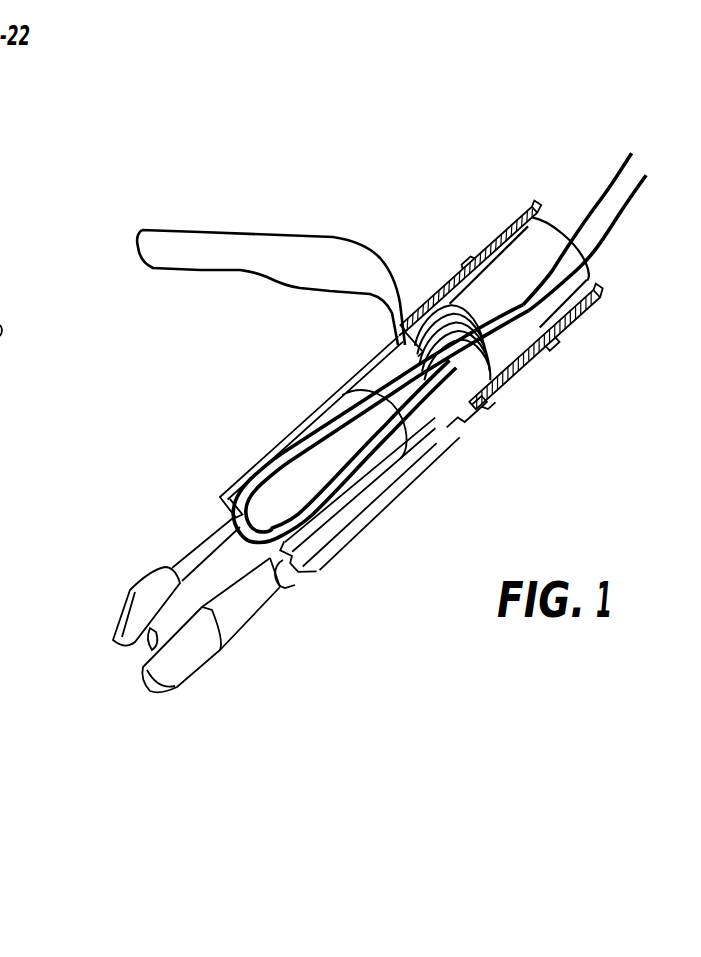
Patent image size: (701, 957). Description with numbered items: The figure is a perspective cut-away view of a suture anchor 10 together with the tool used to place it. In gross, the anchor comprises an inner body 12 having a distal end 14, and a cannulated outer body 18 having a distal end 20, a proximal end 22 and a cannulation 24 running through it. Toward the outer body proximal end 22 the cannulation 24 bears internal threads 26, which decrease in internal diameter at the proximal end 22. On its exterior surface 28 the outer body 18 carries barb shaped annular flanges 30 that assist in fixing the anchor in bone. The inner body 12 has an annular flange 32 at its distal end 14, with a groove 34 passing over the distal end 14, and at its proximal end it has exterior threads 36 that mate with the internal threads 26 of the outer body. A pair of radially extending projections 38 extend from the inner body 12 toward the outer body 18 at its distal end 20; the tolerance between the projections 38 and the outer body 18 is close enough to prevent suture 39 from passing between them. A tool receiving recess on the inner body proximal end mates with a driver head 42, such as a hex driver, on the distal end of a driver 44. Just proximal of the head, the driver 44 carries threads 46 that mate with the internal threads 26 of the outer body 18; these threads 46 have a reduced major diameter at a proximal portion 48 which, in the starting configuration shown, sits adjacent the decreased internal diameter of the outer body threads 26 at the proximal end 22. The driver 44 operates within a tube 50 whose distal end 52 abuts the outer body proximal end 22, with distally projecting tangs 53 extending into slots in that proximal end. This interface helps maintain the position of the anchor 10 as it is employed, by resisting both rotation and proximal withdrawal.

The suture anchor 10 is at (502, 172).
The inner body 12 is at (263, 615).
The distal end 14 is at (147, 687).
The cannulated outer body 18 is at (383, 517).
The distal end 20 is at (217, 505).
The proximal end 22 is at (553, 337).
The cannulation 24 is at (445, 442).
The internal threads 26 is at (497, 390).
The exterior surface 28 is at (343, 380).
The barb shaped annular flanges 30 is at (485, 255).
The annular flange 32 is at (217, 660).
The groove 34 is at (127, 655).
The exterior threads 36 is at (412, 345).
The radially extending projections 38 is at (295, 568).
The suture 39 is at (178, 228).
The driver head 42 is at (357, 400).
The driver 44 is at (530, 213).
The threads 46 is at (450, 313).
The proximal portion 48 is at (550, 250).
The tube 50 is at (597, 300).
The distal end 52 is at (547, 347).
The distally projecting tangs 53 is at (487, 403).